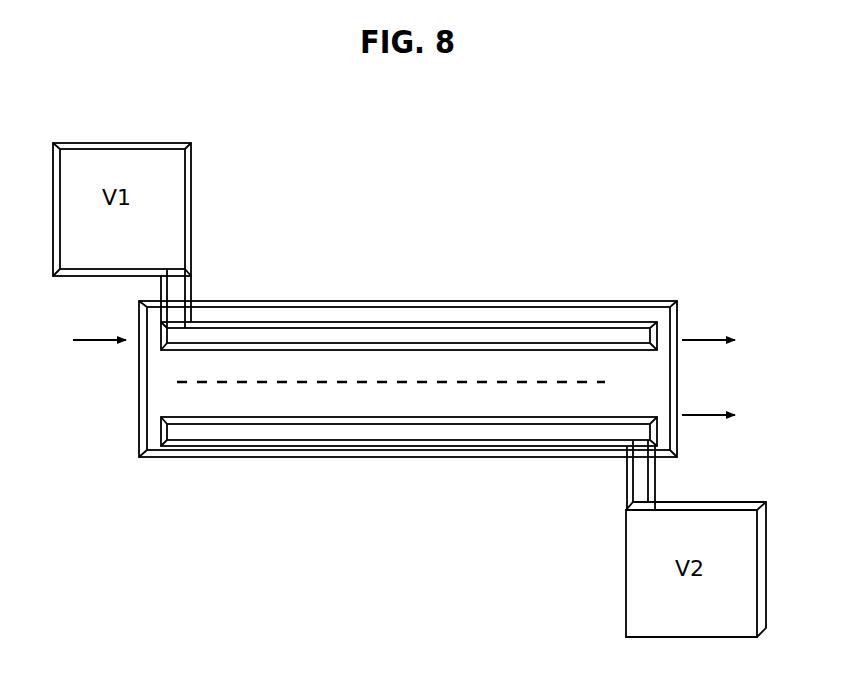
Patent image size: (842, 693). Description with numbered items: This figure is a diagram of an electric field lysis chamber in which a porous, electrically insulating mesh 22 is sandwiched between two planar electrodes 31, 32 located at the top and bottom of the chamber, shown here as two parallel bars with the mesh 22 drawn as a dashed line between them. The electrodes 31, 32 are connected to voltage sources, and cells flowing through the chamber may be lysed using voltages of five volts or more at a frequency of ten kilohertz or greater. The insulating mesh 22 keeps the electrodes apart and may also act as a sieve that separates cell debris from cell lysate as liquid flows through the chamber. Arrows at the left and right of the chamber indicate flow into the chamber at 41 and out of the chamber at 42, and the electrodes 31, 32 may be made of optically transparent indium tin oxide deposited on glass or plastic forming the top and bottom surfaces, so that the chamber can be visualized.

The porous, electrically insulating mesh 22 is at (238, 382).
The planar electrode 31 is at (660, 312).
The planar electrode 32 is at (577, 298).
The inlet 41 is at (143, 395).
The outlet 42 is at (675, 388).